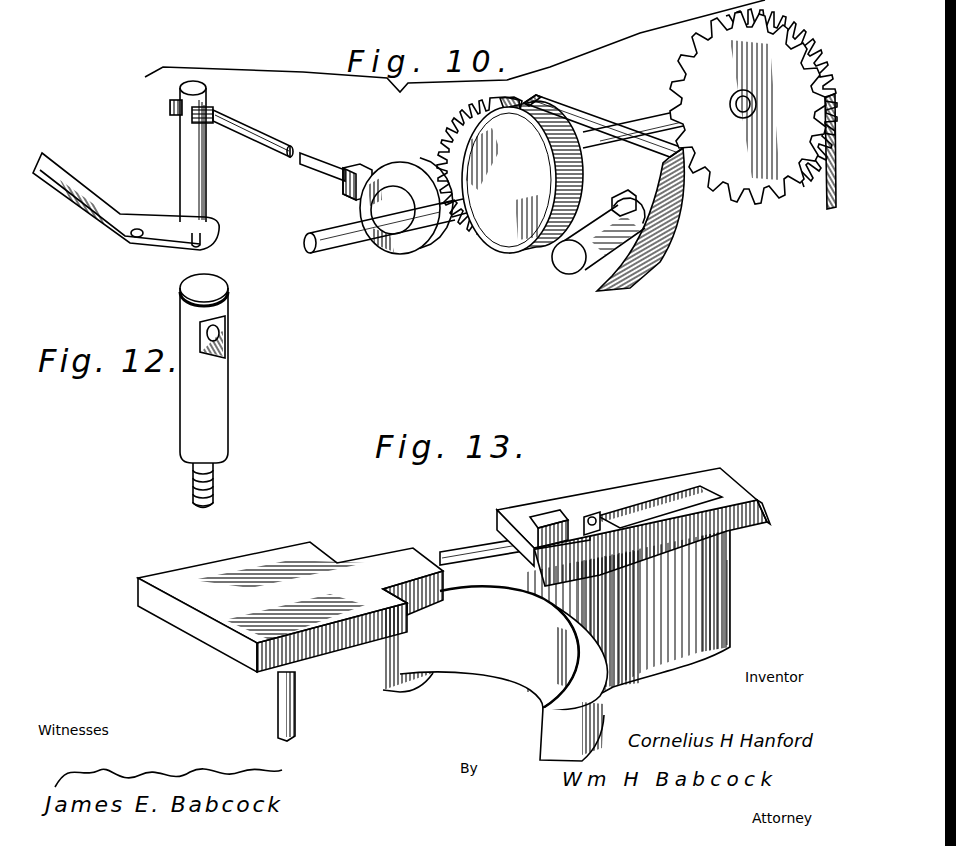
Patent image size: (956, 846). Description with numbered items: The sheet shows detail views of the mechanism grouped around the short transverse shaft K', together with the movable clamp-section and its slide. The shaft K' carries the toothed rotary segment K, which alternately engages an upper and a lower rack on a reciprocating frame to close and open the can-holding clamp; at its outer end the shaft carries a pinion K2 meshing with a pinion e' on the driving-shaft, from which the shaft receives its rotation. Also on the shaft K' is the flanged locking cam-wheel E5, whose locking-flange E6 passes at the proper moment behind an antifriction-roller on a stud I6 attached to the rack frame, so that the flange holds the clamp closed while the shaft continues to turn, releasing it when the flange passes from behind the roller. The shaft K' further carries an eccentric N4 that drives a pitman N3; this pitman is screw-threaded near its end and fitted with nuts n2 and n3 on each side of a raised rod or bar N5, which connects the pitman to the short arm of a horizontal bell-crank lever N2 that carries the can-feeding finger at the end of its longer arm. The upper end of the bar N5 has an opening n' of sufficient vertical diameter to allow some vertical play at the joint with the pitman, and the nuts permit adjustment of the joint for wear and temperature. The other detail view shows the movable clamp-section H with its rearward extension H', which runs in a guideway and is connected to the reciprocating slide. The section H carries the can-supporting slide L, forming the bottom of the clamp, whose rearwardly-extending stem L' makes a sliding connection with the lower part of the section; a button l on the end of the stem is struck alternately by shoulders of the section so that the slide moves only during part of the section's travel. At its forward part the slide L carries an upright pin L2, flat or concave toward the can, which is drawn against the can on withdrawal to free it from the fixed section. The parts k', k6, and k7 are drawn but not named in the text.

In FIG. 10, the horizontal bell-crank lever N2 is at (86, 203).
In FIG. 10, the raised rod or bar N5 is at (212, 170).
In FIG. 12, the raised rod or bar N5 is at (222, 447).
In FIG. 10, the nut n2 is at (172, 110).
In FIG. 10, the nut n3 is at (214, 110).
In FIG. 10, the pitman N3 is at (292, 149).
In FIG. 10, the eccentric N4 is at (406, 246).
In FIG. 10, the toothed rotary segment K is at (470, 167).
In FIG. 10, the shaft K' is at (521, 188).
In FIG. 10, the stud I6 is at (614, 184).
In FIG. 10, the flanged locking cam-wheel E5 is at (586, 112).
In FIG. 10, the locking-flange E6 is at (583, 271).
In FIG. 10, the pinion K2 is at (796, 19).
In FIG. 10, the pinion e' is at (819, 163).
In FIG. 12, the opening n' is at (228, 337).
In FIG. 13, the movable clamp-section H is at (556, 645).
In FIG. 13, the rearward extension H' is at (735, 603).
In FIG. 13, the can-supporting slide L is at (290, 599).
In FIG. 13, the upright pin L2 is at (277, 710).
In FIG. 13, the rearwardly-extending stem L' is at (515, 543).
In FIG. 13, the carriage frame k' is at (633, 513).
In FIG. 13, the slot opening k6 is at (722, 492).
In FIG. 13, the slide block k7 is at (553, 515).
In FIG. 13, the button l is at (603, 510).